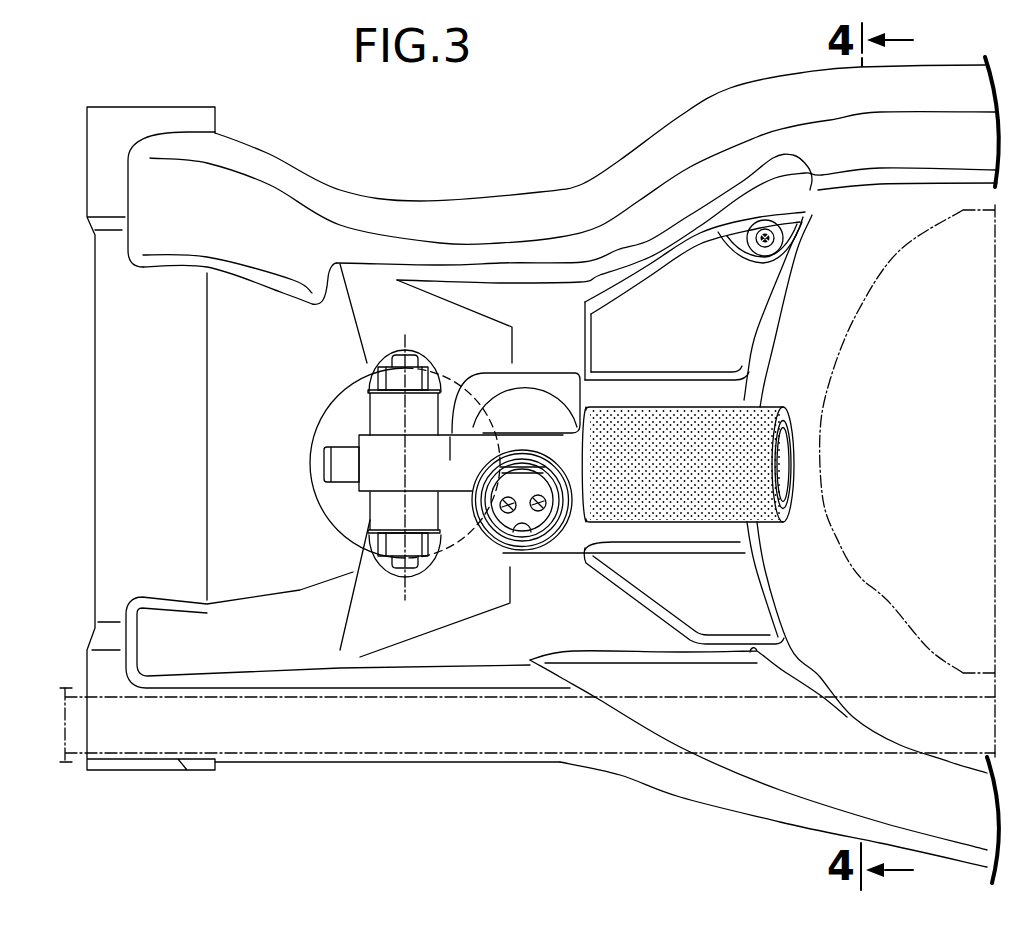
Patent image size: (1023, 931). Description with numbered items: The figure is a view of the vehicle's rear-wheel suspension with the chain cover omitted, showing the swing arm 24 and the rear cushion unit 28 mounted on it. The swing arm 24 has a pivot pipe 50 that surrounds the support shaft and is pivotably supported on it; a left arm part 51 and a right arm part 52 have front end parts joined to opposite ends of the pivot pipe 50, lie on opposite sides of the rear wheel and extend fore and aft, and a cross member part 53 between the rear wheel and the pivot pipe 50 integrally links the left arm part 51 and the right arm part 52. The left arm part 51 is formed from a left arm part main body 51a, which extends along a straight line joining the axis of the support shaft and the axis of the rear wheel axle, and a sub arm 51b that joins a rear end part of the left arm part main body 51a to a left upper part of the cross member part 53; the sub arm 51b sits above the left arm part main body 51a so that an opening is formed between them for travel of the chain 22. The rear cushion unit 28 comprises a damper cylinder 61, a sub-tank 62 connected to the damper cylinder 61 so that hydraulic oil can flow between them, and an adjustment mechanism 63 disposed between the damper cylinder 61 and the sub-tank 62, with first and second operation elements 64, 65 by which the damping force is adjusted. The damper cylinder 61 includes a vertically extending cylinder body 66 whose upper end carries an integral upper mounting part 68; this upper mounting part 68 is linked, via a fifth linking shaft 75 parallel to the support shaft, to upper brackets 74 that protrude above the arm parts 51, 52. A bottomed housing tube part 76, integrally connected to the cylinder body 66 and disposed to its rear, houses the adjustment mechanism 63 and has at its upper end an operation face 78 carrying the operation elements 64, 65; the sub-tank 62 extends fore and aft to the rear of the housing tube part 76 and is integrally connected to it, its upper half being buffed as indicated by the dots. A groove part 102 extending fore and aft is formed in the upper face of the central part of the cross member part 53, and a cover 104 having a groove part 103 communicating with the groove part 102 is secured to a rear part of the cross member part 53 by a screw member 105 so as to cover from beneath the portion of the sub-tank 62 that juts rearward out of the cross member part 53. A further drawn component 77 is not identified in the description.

The chain 22 is at (405, 753).
The swing arm 24 is at (705, 98).
The rear cushion unit 28 is at (573, 400).
The pivot pipe 50 is at (117, 447).
The left arm part 51 is at (655, 799).
The left arm part main body 51a is at (747, 797).
The sub arm 51b is at (843, 743).
The right arm part 52 is at (790, 87).
The cross member part 53 is at (552, 293).
The damper cylinder 61 is at (308, 434).
The sub-tank 62 is at (713, 417).
The adjustment mechanism 63 is at (521, 445).
The first operation element 64 is at (438, 553).
The second operation element 65 is at (546, 502).
The cylinder body 66 is at (313, 455).
The upper mounting part 68 is at (373, 482).
The upper brackets 74 is at (358, 356).
The fifth linking shaft 75 is at (412, 357).
The housing tube part 76 is at (565, 545).
The lower hole 77 is at (507, 560).
The operation face 78 is at (533, 487).
The groove part 102 is at (563, 380).
The groove part 103 is at (723, 533).
The cover 104 is at (750, 285).
The screw member 105 is at (783, 235).